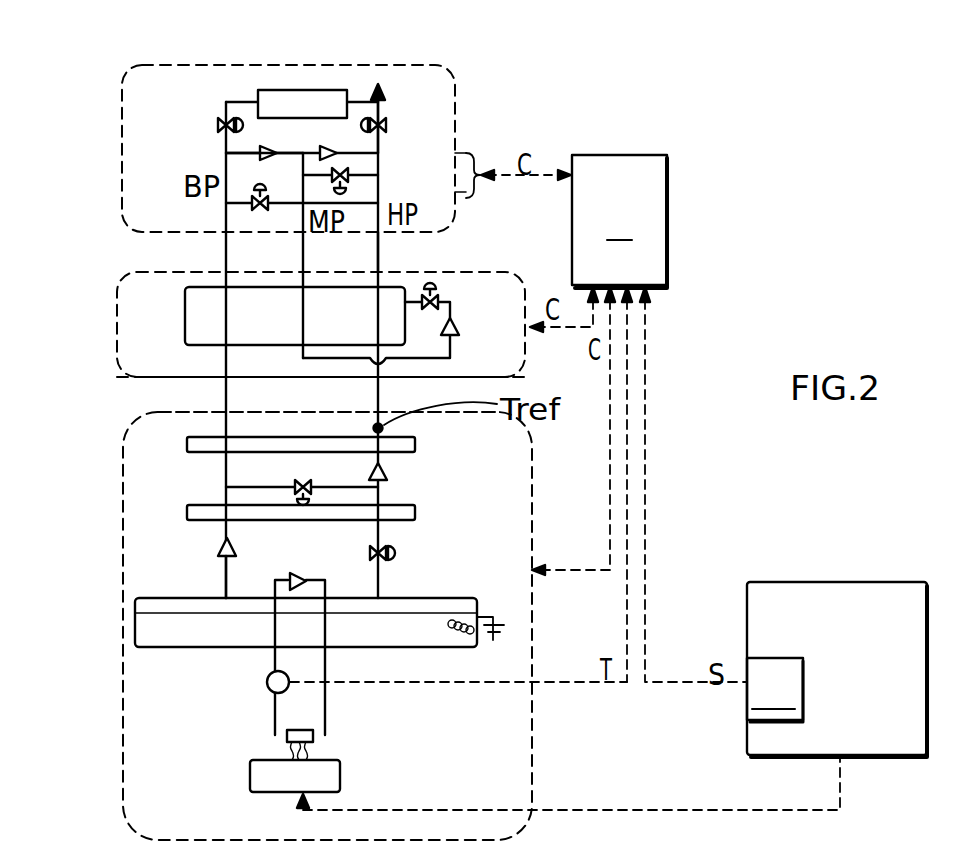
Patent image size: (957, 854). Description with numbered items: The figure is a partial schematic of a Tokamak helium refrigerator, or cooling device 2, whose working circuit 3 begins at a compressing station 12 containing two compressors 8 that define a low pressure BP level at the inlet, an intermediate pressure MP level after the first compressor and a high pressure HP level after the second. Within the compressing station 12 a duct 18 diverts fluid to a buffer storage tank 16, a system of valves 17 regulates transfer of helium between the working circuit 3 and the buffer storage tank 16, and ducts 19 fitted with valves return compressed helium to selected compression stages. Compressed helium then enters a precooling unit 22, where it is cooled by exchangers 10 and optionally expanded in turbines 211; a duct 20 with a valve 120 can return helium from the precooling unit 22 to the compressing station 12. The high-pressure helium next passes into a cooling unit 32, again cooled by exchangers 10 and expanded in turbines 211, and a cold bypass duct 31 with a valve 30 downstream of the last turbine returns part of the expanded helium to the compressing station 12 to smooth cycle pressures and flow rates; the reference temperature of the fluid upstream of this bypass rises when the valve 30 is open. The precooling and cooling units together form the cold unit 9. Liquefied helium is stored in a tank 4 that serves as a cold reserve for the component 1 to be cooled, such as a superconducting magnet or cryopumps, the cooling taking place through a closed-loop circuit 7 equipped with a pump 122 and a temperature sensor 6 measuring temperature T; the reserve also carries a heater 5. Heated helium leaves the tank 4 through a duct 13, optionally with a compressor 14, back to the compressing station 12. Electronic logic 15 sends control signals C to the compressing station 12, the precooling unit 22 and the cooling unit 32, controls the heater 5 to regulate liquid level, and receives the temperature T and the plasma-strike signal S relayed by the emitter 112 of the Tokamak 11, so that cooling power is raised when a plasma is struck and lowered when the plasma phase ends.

The component to be cooled 1 is at (325, 778).
The cooling device 2 is at (103, 343).
The working circuit 3 is at (390, 271).
The tank 4 is at (128, 625).
The heater 5 is at (493, 642).
The temperature sensor 6 is at (262, 684).
The closed-loop circuit 7 is at (273, 711).
The compressor 8 is at (226, 153).
The thermal module assembly 9 is at (64, 372).
The exchanger 10 is at (185, 310).
The Tokamak 11 is at (815, 580).
The compressing station 12 is at (120, 240).
The duct 13 is at (221, 575).
The compressor 14 is at (214, 548).
The electronic logic 15 is at (619, 221).
The buffer storage tank 16 is at (258, 92).
The valve 17 is at (212, 121).
The duct 18 is at (386, 92).
The duct 19 is at (252, 206).
The duct 20 is at (440, 360).
The precooling unit 22 is at (143, 380).
The valve 30 is at (310, 499).
The cold bypass duct 31 is at (268, 487).
The cooling unit 32 is at (131, 433).
The emitter 112 is at (775, 690).
The valve 120 is at (437, 284).
The pump 122 is at (297, 572).
The turbine 211 is at (458, 327).